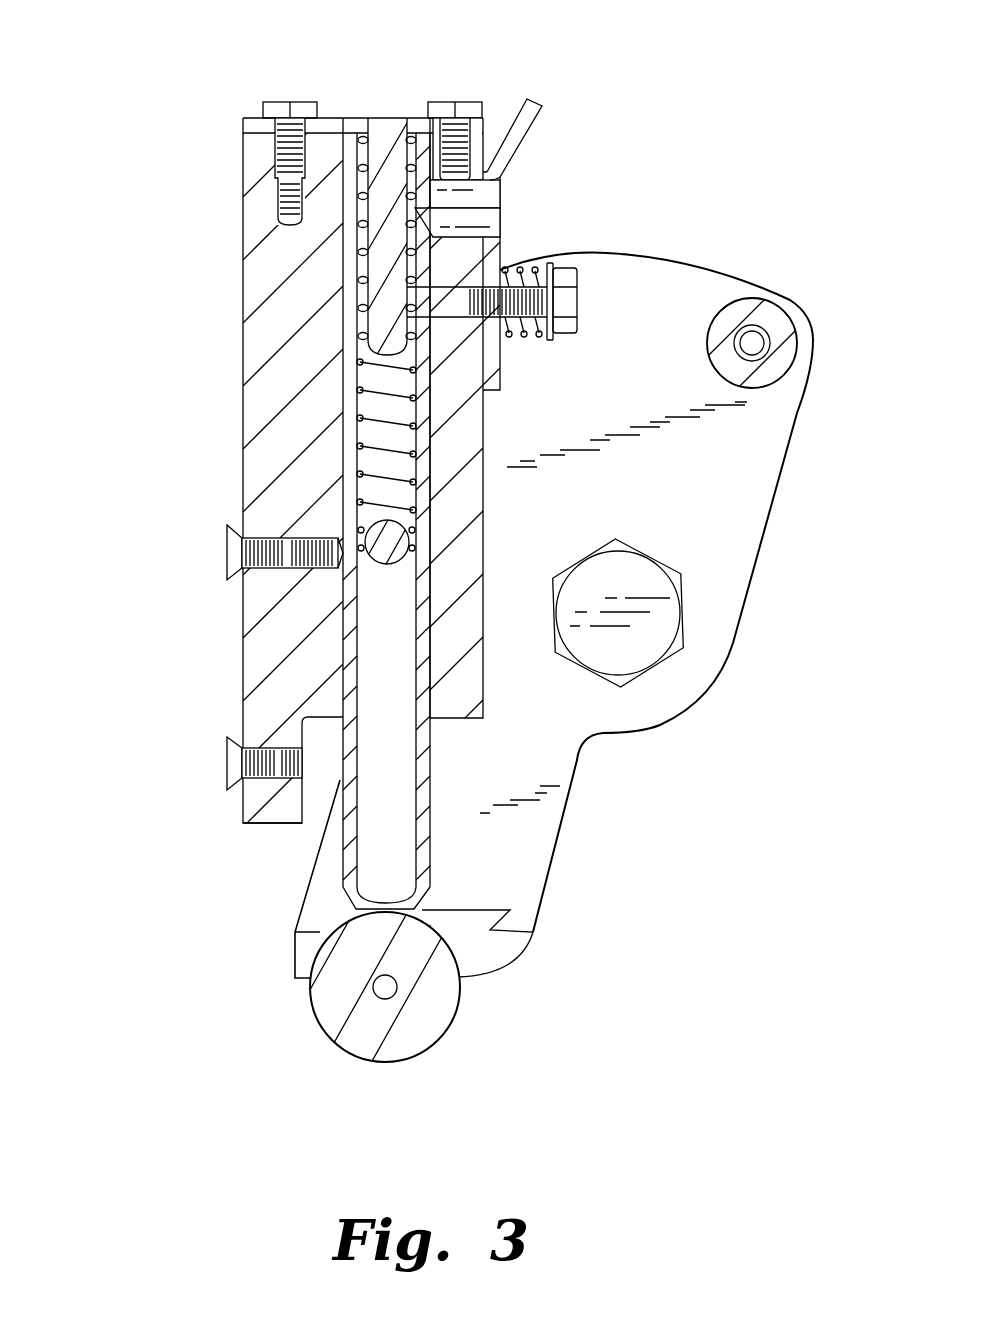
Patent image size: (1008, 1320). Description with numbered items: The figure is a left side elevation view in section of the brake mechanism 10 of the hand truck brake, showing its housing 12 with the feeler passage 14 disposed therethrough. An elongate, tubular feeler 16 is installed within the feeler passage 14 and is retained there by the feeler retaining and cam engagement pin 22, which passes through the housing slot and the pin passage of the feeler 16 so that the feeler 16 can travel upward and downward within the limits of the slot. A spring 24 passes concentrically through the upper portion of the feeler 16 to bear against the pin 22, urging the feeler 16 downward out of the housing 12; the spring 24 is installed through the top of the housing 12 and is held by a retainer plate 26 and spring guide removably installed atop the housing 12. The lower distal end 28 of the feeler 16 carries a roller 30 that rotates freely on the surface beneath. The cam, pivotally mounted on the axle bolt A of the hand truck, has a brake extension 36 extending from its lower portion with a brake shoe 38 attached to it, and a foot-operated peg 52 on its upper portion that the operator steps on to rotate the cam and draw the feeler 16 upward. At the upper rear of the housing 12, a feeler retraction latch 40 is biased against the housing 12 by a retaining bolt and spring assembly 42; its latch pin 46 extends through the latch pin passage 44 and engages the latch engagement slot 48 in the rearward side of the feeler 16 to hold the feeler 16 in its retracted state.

The brake mechanism 10 is at (455, 588).
The housing 12 is at (243, 367).
The feeler passage 14 is at (349, 160).
The feeler 16 is at (343, 648).
The feeler retaining and cam engagement pin 22 is at (365, 510).
The spring 24 is at (350, 268).
The retainer plate 26 is at (388, 118).
The lower distal end 28 is at (350, 900).
The roller 30 is at (313, 1017).
The brake extension 36 is at (562, 833).
The brake shoe 38 is at (513, 967).
The feeler retraction latch 40 is at (545, 97).
The retaining bolt and spring assembly 42 is at (530, 337).
The latch pin passage 44 is at (470, 212).
The latch pin 46 is at (465, 203).
The latch engagement slot 48 is at (420, 380).
The foot-operated peg 52 is at (800, 313).
The axle bolt A is at (668, 652).